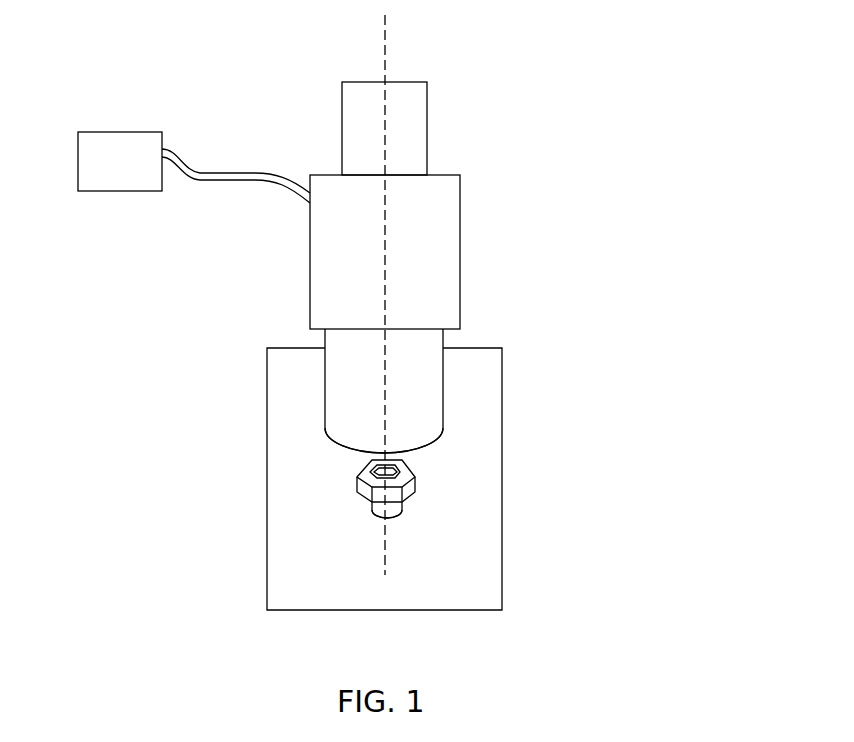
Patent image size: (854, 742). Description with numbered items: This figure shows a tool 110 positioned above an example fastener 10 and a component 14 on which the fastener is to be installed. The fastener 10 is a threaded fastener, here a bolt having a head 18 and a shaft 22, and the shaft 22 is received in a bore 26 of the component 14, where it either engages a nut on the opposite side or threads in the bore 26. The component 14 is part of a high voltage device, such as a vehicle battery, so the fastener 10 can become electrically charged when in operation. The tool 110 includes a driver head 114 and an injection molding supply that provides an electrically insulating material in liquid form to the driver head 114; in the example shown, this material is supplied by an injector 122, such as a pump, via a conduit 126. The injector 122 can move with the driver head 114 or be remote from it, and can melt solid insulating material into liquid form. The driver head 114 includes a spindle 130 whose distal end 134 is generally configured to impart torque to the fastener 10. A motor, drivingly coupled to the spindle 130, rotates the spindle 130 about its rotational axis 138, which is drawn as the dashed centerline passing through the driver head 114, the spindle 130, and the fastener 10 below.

The tool 110 is at (162, 80).
The rotational axis 138 is at (385, 40).
The head 18 is at (428, 117).
The driver head 114 is at (462, 295).
The injector 122 is at (122, 191).
The conduit 126 is at (250, 180).
The spindle 130 is at (430, 388).
The distal end 134 is at (418, 452).
The fastener 10 is at (344, 479).
The shaft 22 is at (370, 503).
The bore 26 is at (400, 508).
The component 14 is at (283, 590).